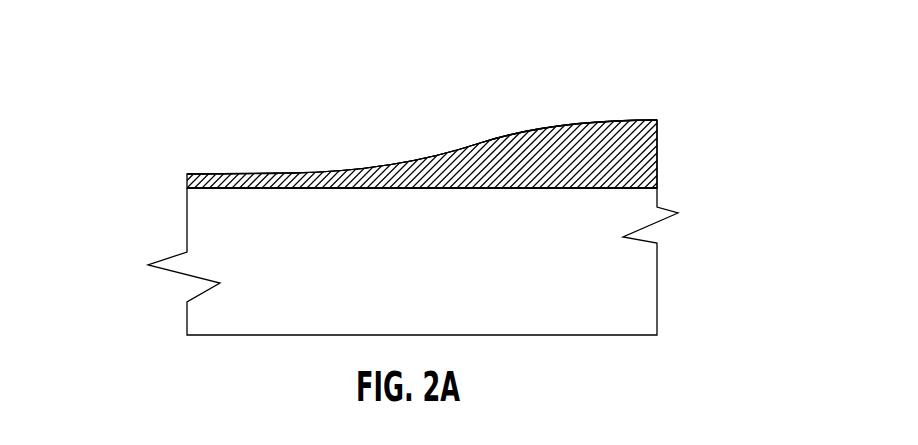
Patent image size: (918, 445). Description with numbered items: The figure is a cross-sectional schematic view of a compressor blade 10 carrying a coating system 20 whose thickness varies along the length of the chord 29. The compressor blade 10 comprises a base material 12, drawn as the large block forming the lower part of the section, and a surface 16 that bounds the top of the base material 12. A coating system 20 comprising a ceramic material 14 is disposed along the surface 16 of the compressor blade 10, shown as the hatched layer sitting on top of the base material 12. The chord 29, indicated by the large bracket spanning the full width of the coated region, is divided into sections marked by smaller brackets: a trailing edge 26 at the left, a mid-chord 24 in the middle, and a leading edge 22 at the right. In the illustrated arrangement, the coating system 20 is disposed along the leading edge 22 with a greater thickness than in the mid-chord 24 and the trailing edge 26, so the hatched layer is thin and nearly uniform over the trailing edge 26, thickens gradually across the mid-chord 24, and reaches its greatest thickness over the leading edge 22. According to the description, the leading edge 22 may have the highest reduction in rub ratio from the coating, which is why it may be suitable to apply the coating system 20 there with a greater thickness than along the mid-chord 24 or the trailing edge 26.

The compressor blade 10 is at (116, 89).
The base material 12 is at (630, 306).
The ceramic material 14 is at (186, 187).
The surface 16 is at (668, 188).
The coating system 20 is at (157, 138).
The leading edge 22 is at (480, 117).
The mid-chord 24 is at (283, 142).
The trailing edge 26 is at (190, 153).
The chord 29 is at (203, 82).